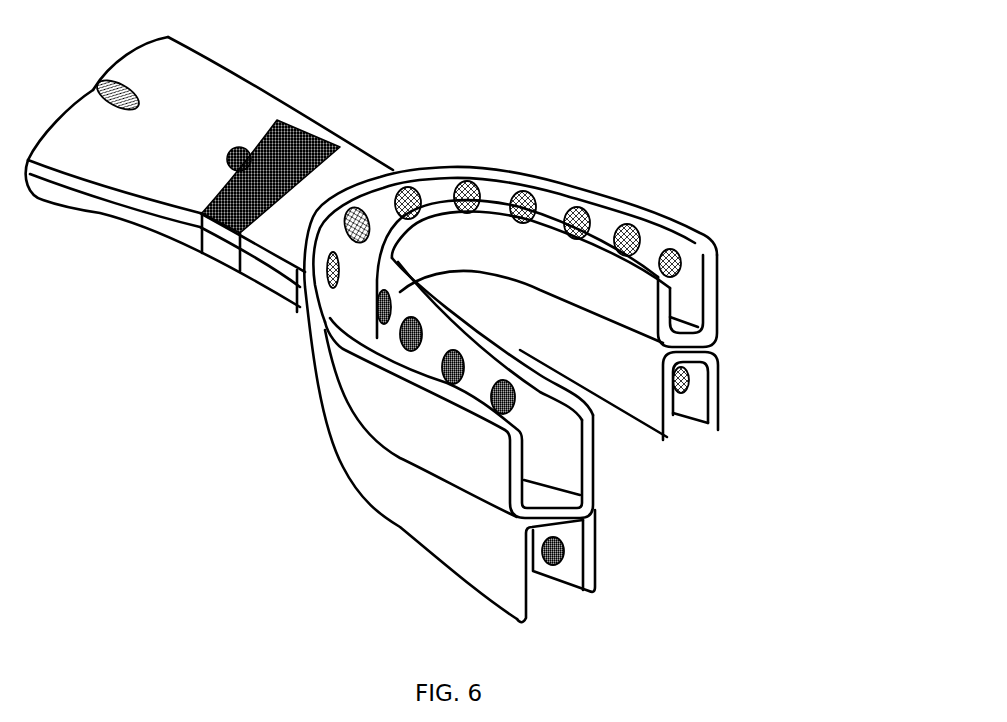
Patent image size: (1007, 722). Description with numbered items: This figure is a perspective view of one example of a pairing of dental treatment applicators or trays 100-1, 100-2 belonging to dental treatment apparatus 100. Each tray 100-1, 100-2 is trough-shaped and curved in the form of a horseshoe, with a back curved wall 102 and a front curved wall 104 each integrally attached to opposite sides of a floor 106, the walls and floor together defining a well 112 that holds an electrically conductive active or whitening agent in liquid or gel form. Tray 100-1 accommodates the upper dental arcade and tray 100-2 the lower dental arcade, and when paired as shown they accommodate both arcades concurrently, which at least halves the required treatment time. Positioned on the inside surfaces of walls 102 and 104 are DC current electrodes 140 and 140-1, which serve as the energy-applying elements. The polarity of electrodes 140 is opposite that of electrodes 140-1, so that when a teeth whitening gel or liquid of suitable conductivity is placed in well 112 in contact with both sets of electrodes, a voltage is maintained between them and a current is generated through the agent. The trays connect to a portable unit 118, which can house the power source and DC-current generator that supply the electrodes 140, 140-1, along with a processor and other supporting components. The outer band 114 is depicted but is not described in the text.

The dental treatment apparatus 100 is at (491, 118).
The dental treatment applicator or tray 100-1 is at (735, 285).
The dental treatment applicator or tray 100-2 is at (678, 452).
The back curved wall 102 is at (410, 299).
The front curved wall 104 is at (437, 197).
The floor 106 is at (545, 495).
The well 112 is at (491, 183).
The outer wall 114 is at (702, 245).
The portable unit 118 is at (207, 97).
The DC current electrodes 140 is at (422, 336).
The electrodes 140-1 is at (538, 212).